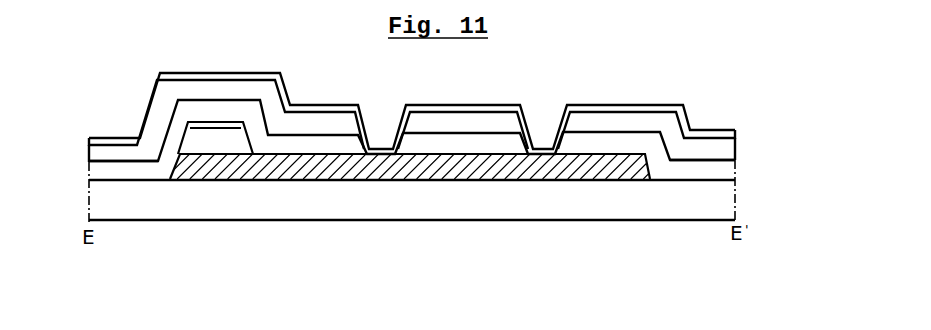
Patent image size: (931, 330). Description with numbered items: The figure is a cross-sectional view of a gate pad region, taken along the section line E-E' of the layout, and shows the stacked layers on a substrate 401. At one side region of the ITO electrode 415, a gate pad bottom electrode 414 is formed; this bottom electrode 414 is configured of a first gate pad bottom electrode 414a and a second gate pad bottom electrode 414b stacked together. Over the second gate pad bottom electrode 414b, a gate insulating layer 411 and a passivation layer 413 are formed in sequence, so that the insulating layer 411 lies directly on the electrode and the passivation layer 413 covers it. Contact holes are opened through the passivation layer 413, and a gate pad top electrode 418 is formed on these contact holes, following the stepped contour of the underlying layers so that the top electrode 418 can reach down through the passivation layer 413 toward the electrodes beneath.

The substrate 401 is at (731, 201).
The gate insulating layer 411 is at (731, 171).
The passivation layer 413 is at (731, 147).
The gate pad bottom electrode 414 is at (220, 206).
The first gate pad bottom electrode 414a is at (200, 152).
The second gate pad bottom electrode 414b is at (238, 126).
The ITO electrode 415 is at (435, 173).
The gate pad top electrode 418 is at (625, 108).